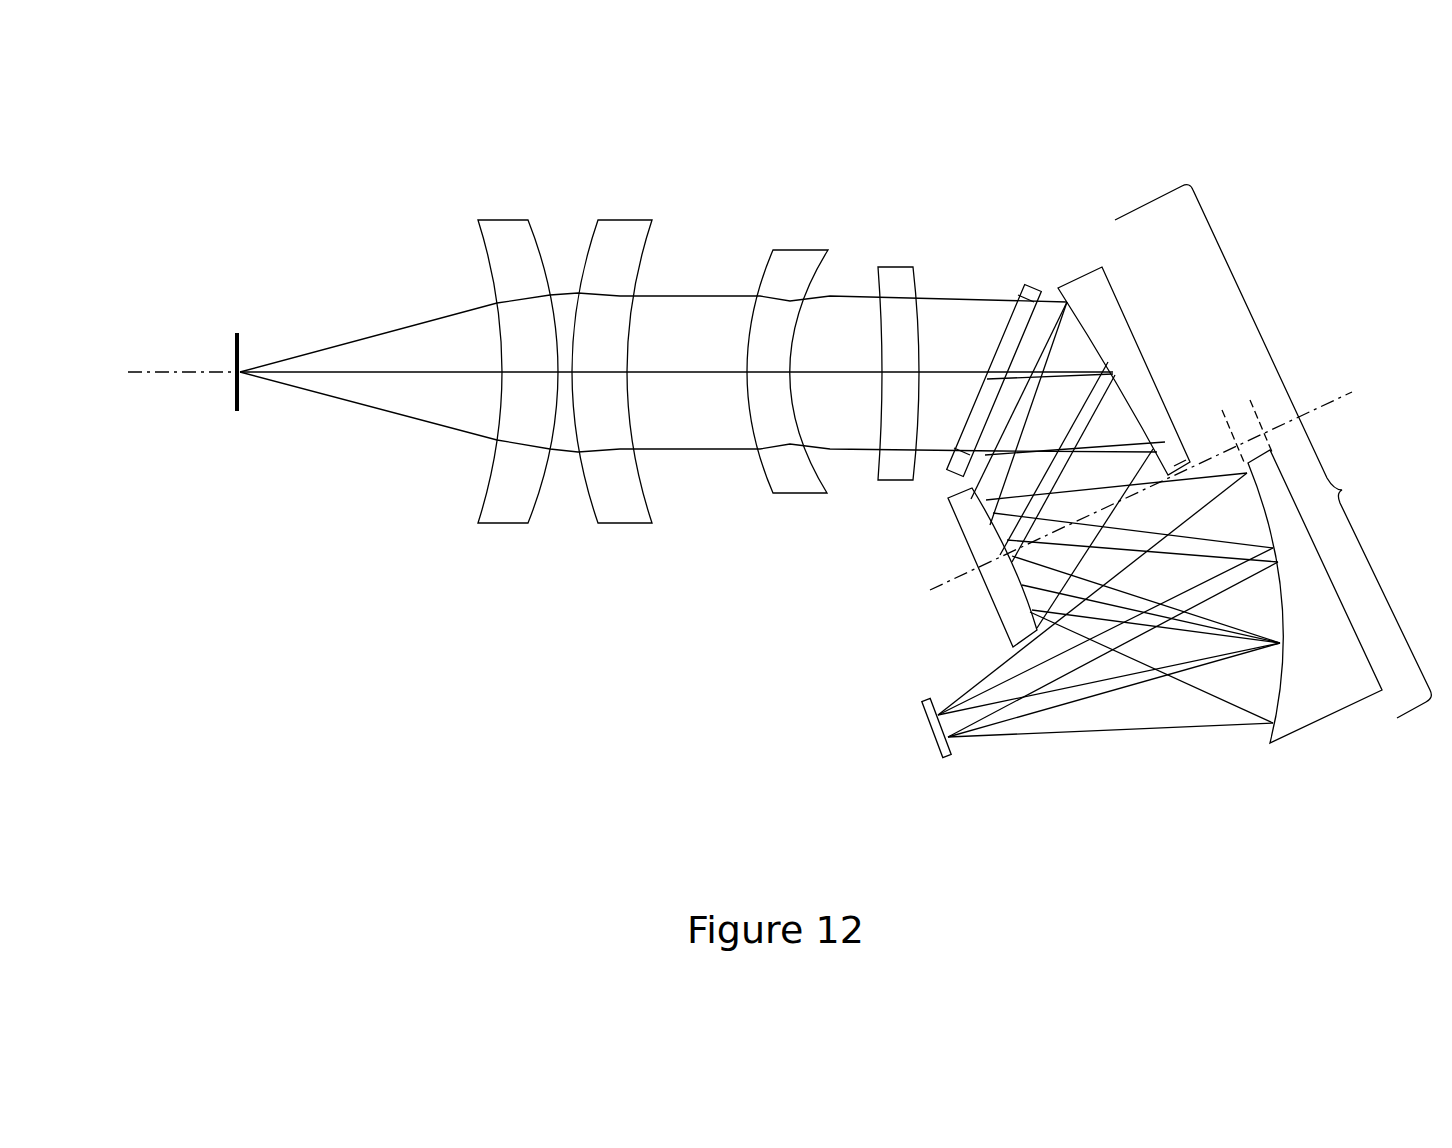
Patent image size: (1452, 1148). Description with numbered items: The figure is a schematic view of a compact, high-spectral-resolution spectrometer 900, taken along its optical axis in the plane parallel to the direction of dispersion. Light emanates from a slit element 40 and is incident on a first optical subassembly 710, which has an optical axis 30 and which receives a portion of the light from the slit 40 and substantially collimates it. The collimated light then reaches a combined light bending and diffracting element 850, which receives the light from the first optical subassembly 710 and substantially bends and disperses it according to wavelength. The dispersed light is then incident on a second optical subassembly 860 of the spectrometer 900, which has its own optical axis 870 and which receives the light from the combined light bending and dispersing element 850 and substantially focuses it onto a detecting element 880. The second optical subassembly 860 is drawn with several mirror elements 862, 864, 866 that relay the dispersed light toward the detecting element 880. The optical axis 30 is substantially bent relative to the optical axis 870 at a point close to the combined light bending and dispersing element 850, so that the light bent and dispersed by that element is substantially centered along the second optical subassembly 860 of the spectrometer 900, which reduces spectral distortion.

The spectrometer 900 is at (244, 124).
The optical axis 30 is at (163, 374).
The slit element 40 is at (232, 349).
The first optical subassembly 710 is at (935, 222).
The combined light bending and diffracting element 850 is at (1032, 292).
The second optical subassembly 860 is at (1342, 490).
The first concave mirror 862 is at (1135, 334).
The secondary mirror 864 is at (999, 615).
The second concave mirror 866 is at (1327, 717).
The optical axis 870 is at (1335, 392).
The detecting element 880 is at (933, 730).